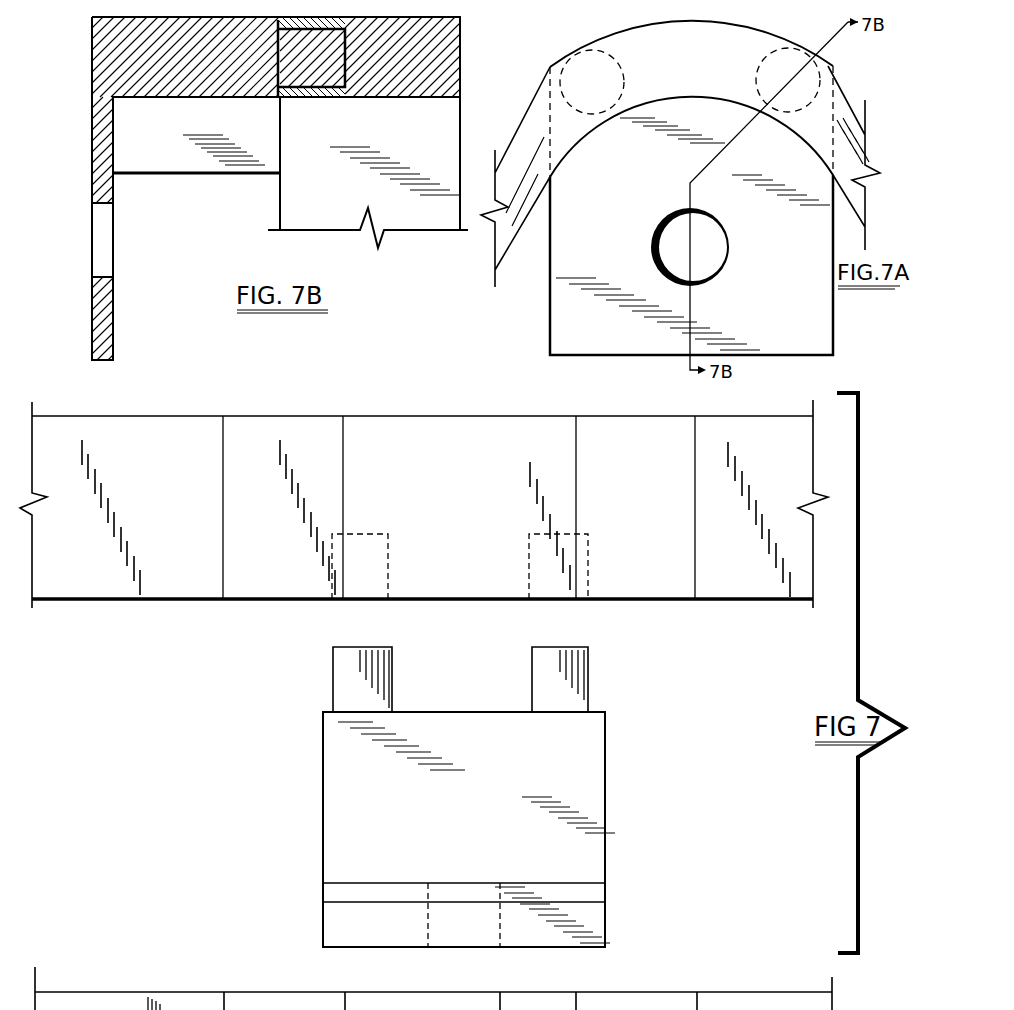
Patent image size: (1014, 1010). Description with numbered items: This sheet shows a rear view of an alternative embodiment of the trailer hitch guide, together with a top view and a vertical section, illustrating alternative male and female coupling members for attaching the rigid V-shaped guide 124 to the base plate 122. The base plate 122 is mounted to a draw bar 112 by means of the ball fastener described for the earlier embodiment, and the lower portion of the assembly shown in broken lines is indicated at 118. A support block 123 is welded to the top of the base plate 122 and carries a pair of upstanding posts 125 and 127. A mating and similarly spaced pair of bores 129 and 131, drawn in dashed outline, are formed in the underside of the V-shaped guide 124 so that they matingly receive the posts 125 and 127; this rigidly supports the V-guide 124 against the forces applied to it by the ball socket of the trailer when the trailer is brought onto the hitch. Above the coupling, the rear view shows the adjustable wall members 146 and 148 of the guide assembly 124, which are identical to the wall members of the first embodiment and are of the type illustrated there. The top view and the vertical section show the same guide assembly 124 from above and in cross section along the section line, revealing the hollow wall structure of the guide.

The draw bar 112 is at (660, 927).
The channel 118 is at (428, 930).
The base plate 122 is at (660, 882).
The support block 123 is at (593, 775).
The V-shaped guide 124 is at (70, 575).
The upstanding post 125 is at (567, 683).
The upstanding post 127 is at (440, 671).
The bore 129 is at (388, 573).
The bore 131 is at (529, 573).
The wall member 146 is at (650, 578).
The wall member 148 is at (288, 583).